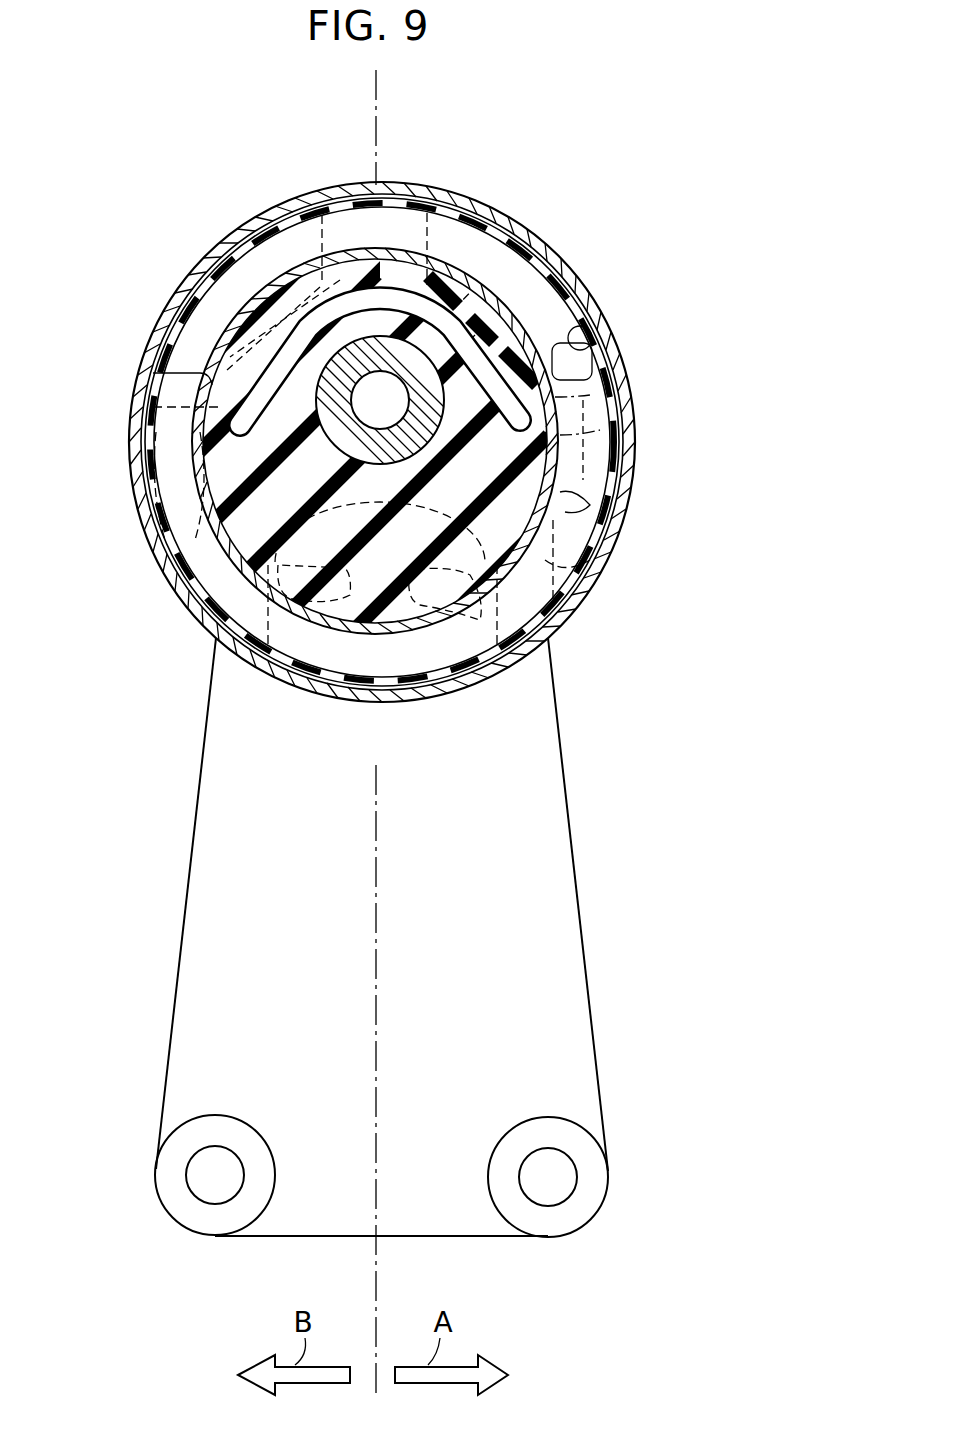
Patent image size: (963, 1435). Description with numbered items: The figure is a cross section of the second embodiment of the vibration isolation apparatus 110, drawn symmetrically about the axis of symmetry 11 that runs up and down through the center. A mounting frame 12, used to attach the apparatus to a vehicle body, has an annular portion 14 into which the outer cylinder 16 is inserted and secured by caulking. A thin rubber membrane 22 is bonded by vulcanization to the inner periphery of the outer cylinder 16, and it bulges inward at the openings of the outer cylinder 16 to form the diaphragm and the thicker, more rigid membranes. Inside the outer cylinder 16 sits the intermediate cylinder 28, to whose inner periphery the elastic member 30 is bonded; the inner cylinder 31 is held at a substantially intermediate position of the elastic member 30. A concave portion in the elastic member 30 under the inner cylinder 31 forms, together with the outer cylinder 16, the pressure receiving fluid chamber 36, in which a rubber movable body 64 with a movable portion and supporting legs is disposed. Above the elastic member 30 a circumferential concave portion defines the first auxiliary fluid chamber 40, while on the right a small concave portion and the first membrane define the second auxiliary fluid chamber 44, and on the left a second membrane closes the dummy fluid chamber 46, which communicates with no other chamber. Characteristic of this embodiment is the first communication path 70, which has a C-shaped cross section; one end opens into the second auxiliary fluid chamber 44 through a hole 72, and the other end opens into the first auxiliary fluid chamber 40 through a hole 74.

The vibration isolation apparatus 110 is at (564, 128).
The axis of symmetry 11 is at (379, 1270).
The mounting frame 12 is at (568, 775).
The annular portion 14 is at (503, 217).
The outer cylinder 16 is at (537, 237).
The thin rubber membrane 22 is at (553, 343).
The intermediate cylinder 28 is at (262, 297).
The elastic member 30 is at (548, 580).
The inner cylinder 31 is at (352, 350).
The pressure receiving fluid chamber 36 is at (353, 655).
The first auxiliary fluid chamber 40 is at (407, 230).
The second auxiliary fluid chamber 44 is at (550, 566).
The dummy fluid chamber 46 is at (185, 508).
The movable body 64 is at (405, 610).
The first communication path 70 is at (217, 308).
The hole 72 is at (580, 528).
The hole 74 is at (580, 389).